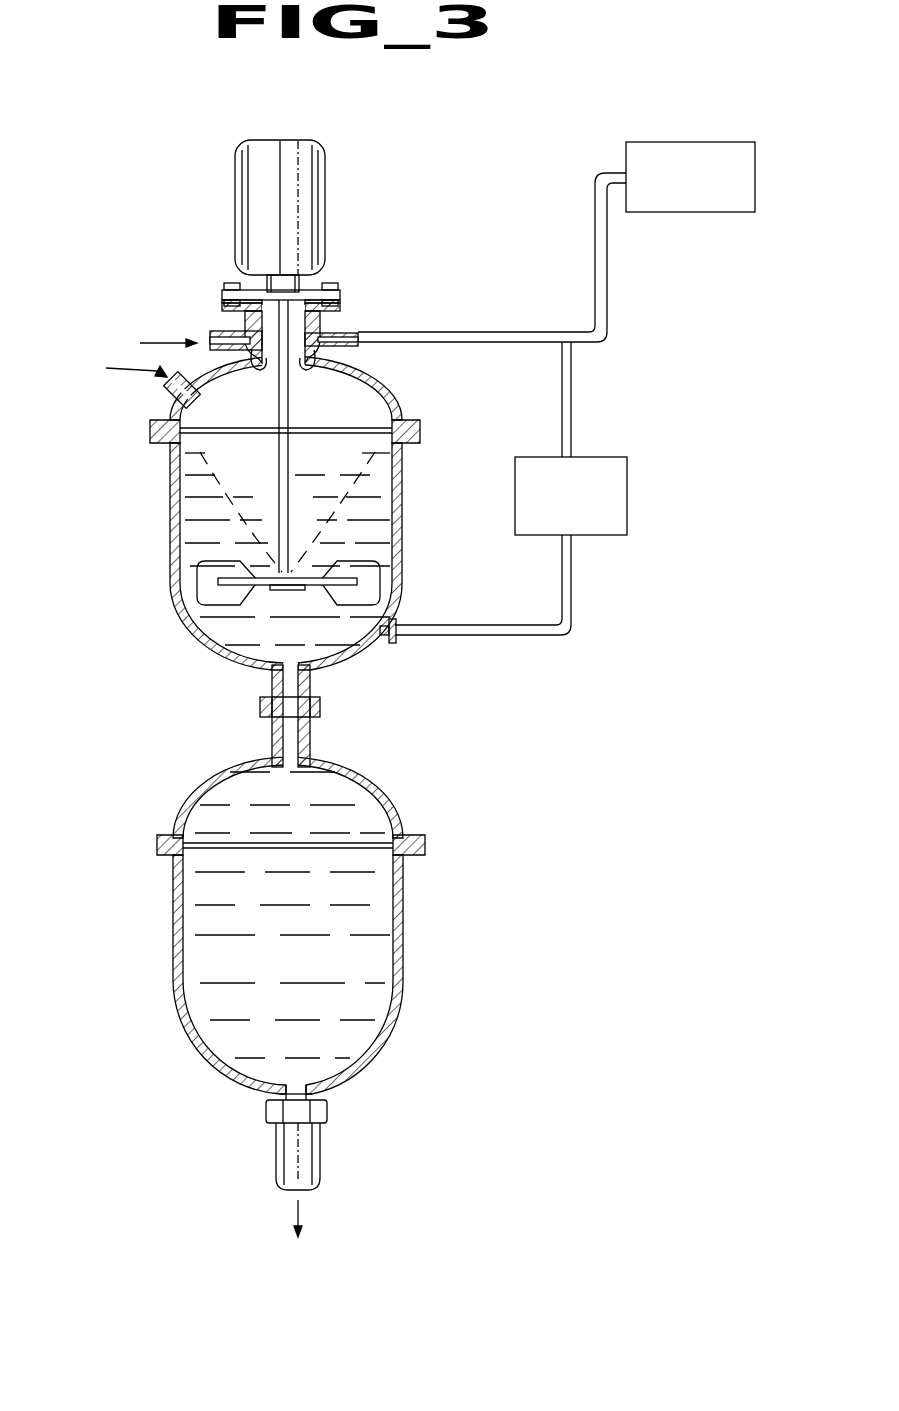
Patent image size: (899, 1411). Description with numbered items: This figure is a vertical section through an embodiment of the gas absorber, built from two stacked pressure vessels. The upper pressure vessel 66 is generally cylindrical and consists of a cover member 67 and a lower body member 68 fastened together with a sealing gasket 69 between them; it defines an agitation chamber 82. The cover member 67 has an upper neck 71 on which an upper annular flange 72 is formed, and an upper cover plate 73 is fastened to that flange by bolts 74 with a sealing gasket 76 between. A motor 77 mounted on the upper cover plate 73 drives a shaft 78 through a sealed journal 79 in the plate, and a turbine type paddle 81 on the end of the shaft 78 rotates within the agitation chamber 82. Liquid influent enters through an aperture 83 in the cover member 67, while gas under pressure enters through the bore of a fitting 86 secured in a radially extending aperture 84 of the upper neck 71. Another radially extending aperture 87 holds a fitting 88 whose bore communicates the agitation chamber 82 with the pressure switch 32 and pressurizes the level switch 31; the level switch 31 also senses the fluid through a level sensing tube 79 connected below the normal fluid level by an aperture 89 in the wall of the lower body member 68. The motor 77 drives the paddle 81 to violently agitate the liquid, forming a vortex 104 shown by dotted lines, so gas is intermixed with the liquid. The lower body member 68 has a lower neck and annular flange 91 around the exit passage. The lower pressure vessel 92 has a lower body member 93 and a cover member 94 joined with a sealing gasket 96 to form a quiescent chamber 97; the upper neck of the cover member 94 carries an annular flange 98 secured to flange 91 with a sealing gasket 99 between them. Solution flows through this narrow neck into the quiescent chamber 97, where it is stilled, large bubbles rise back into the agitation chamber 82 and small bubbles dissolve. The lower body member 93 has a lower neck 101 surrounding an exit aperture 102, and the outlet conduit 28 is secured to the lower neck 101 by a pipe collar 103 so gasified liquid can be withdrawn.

The outlet conduit 28 is at (322, 1157).
The level switch 31 is at (627, 495).
The pressure switch 32 is at (707, 212).
The upper pressure vessel 66 is at (148, 493).
The cover member 67 is at (388, 393).
The lower body member 68 is at (170, 525).
The sealing gasket 69 is at (420, 427).
The upper neck 71 is at (316, 322).
The upper annular flange 72 is at (224, 308).
The upper cover plate 73 is at (341, 294).
The bolts 74 is at (226, 285).
The sealing gasket 76 is at (222, 298).
The motor 77 is at (240, 208).
The shaft 78 is at (278, 412).
The sealed journal 79 is at (283, 280).
The turbine type paddle 81 is at (205, 578).
The agitation chamber 82 is at (234, 473).
The aperture 83 is at (164, 387).
The radially extending aperture 84 is at (262, 362).
The fitting 86 is at (218, 349).
The radially extending aperture 87 is at (306, 365).
The fitting 88 is at (344, 347).
The aperture 89 is at (380, 630).
The lower neck and annular flange 91 is at (268, 697).
The lower pressure vessel 92 is at (158, 900).
The lower body member 93 is at (176, 933).
The cover member 94 is at (380, 784).
The sealing gasket 96 is at (425, 843).
The quiescent chamber 97 is at (304, 901).
The annular flange 98 is at (262, 712).
The sealing gasket 99 is at (321, 704).
The lower neck 101 is at (272, 1094).
The exit aperture 102 is at (302, 1092).
The pipe collar 103 is at (328, 1113).
The vortex 104 is at (245, 505).